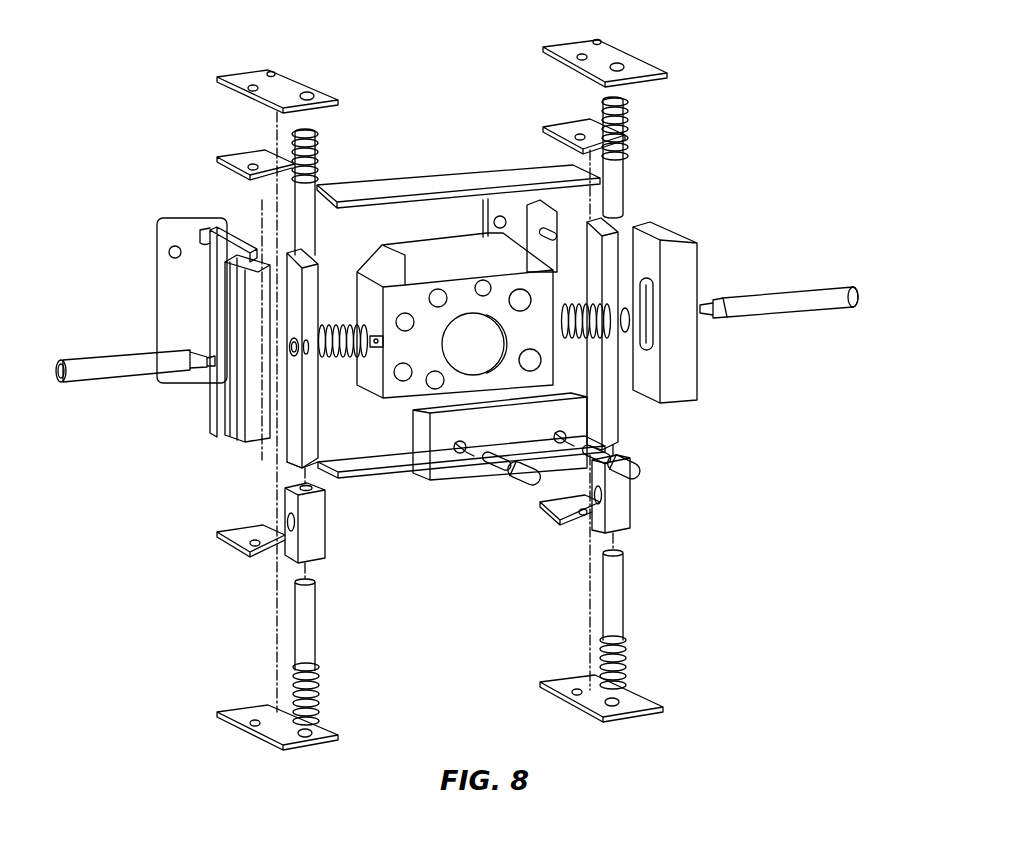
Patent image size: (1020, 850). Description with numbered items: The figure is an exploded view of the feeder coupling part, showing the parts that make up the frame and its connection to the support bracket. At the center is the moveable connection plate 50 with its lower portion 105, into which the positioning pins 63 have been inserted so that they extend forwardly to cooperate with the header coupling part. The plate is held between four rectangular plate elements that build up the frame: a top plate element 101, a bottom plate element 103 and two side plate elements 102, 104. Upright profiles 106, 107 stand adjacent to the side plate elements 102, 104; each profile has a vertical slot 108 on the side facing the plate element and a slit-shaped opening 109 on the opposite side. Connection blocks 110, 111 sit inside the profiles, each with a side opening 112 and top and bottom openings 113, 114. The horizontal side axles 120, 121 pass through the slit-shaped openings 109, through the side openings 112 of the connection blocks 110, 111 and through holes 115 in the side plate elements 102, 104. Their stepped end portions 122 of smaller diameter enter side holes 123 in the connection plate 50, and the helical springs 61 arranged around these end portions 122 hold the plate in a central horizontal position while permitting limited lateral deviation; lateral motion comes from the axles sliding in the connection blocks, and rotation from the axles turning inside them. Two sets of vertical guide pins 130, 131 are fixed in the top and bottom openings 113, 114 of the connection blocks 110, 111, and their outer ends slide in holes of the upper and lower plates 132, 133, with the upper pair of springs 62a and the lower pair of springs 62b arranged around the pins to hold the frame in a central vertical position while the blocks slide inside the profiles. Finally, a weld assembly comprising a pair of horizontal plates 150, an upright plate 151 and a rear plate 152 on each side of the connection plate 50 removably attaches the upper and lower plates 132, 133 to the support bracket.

The moveable connection plate 50 is at (453, 263).
The helical springs 61 is at (351, 366).
The upper pair of springs 62a is at (320, 142).
The lower pair of springs 62b is at (320, 688).
The positioning pins 63 is at (615, 464).
The top plate element 101 is at (472, 178).
The side plate element 102 is at (608, 411).
The bottom plate element 103 is at (413, 460).
The side plate element 104 is at (285, 452).
The lower portion 105 is at (447, 470).
The upright profile 106 is at (233, 425).
The upright profile 107 is at (687, 378).
The vertical slot 108 is at (653, 334).
The slit-shaped opening 109 is at (233, 392).
The connection block 110 is at (318, 535).
The connection block 111 is at (627, 512).
The side opening 112 is at (285, 533).
The top opening 113 is at (315, 478).
The bottom opening 114 is at (313, 568).
The holes 115 is at (336, 322).
The side axle 120 is at (100, 353).
The side axle 121 is at (779, 307).
The end portions 122 is at (705, 302).
The side holes 123 is at (384, 343).
The vertical guide pins 130 is at (288, 198).
The vertical guide pins 131 is at (625, 588).
The upper plate 132 is at (298, 88).
The lower plate 133 is at (253, 713).
The horizontal plates 150 is at (256, 158).
The upright plate 151 is at (205, 238).
The rear plate 152 is at (167, 289).